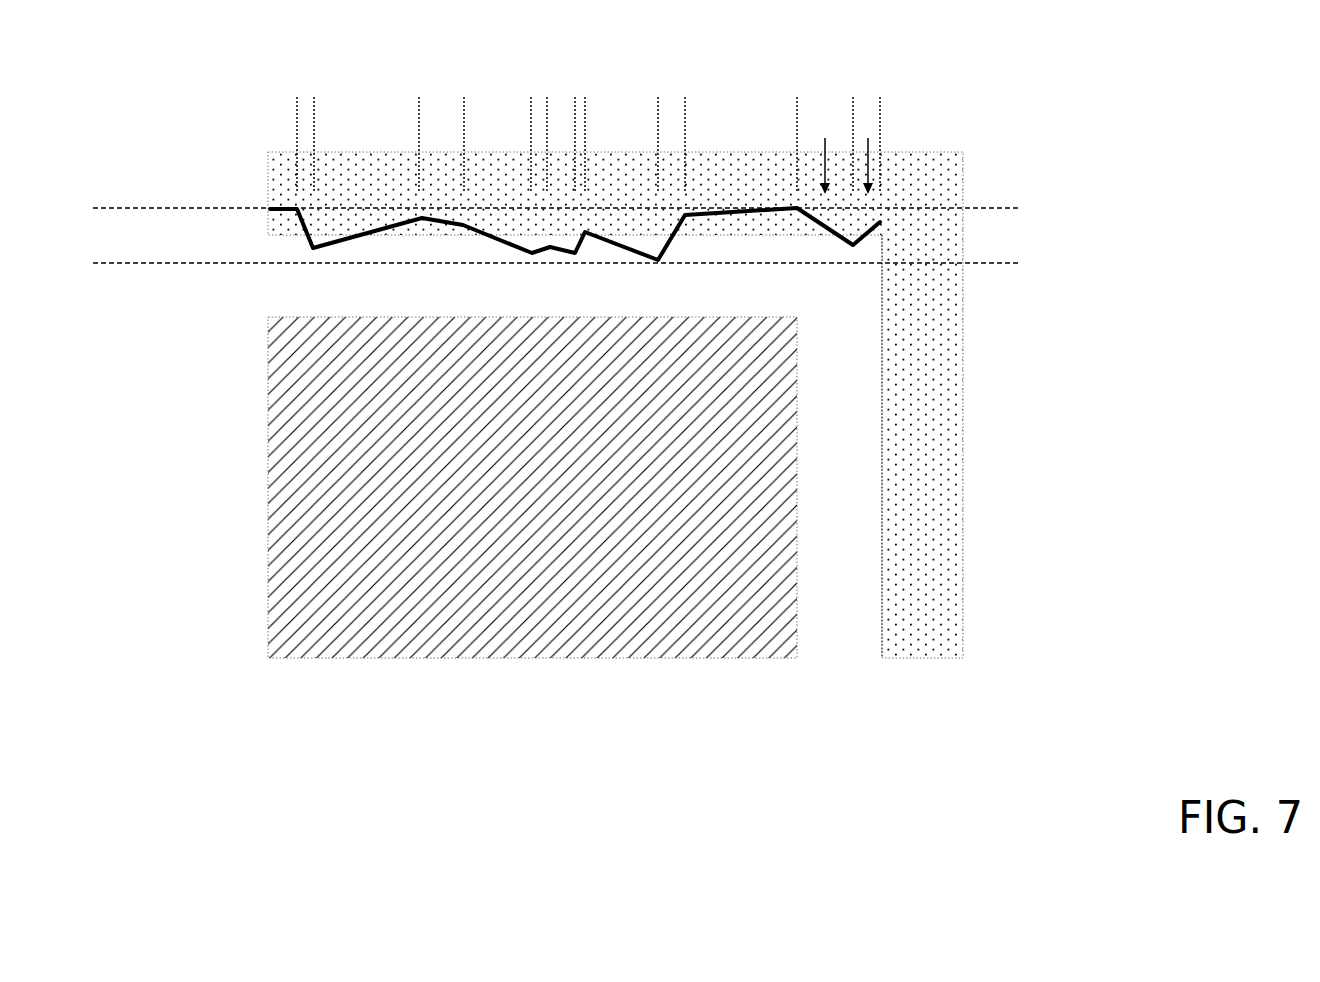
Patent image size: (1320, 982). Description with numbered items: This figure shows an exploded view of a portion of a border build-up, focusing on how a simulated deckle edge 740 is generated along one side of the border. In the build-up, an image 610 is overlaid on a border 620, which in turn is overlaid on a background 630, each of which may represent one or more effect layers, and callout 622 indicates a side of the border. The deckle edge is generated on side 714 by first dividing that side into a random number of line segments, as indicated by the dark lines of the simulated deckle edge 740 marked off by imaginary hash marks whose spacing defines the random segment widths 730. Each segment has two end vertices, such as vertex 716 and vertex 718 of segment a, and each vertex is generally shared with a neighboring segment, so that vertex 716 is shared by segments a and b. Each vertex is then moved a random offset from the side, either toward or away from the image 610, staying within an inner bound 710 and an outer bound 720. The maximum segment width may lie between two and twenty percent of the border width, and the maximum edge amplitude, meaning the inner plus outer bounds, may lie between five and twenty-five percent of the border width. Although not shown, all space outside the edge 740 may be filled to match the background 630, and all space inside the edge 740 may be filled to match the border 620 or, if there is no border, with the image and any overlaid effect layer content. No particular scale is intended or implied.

The image 610 is at (717, 540).
The border 620 is at (845, 457).
The side of the border 622 is at (882, 413).
The background 630 is at (928, 373).
The inner bound 710 is at (1018, 263).
The side 714 is at (265, 235).
The vertex 716 is at (853, 245).
The vertex 718 is at (880, 222).
The outer bound 720 is at (1018, 208).
The random segment widths 730 is at (907, 125).
The simulated deckle edge 740 is at (720, 207).